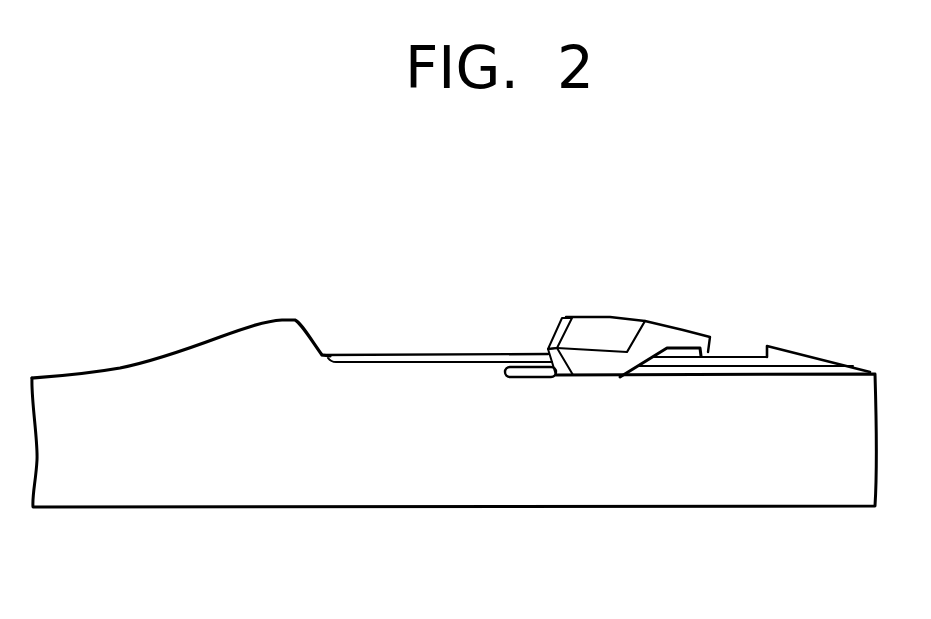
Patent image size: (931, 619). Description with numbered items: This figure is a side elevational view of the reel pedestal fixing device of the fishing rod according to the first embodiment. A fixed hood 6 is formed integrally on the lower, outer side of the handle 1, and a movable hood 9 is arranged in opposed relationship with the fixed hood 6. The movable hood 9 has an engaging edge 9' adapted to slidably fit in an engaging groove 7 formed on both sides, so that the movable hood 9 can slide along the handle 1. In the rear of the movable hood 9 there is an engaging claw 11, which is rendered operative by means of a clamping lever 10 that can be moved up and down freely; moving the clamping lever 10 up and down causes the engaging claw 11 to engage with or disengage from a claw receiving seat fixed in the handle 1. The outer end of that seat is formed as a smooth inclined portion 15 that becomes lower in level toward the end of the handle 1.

The handle 1 is at (728, 482).
The fixed hood 6 is at (278, 321).
The engaging groove 7 is at (745, 366).
The movable hood 9 is at (552, 297).
The engaging edge 9' is at (518, 317).
The clamping lever 10 is at (608, 327).
The engaging claw 11 is at (726, 349).
The smooth inclined portion 15 is at (824, 353).